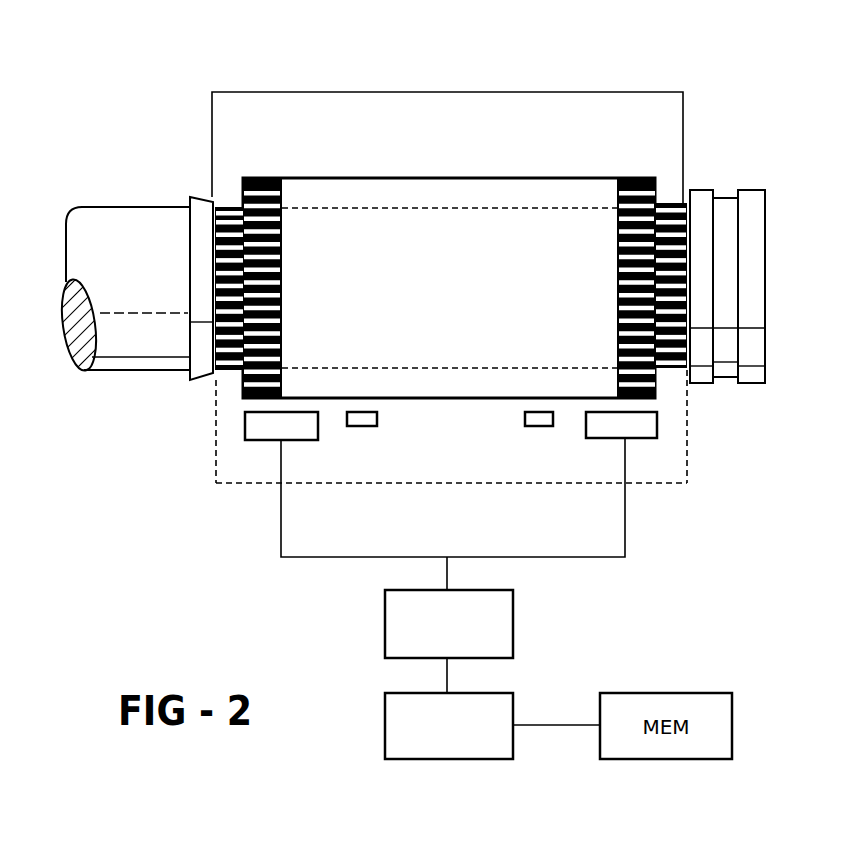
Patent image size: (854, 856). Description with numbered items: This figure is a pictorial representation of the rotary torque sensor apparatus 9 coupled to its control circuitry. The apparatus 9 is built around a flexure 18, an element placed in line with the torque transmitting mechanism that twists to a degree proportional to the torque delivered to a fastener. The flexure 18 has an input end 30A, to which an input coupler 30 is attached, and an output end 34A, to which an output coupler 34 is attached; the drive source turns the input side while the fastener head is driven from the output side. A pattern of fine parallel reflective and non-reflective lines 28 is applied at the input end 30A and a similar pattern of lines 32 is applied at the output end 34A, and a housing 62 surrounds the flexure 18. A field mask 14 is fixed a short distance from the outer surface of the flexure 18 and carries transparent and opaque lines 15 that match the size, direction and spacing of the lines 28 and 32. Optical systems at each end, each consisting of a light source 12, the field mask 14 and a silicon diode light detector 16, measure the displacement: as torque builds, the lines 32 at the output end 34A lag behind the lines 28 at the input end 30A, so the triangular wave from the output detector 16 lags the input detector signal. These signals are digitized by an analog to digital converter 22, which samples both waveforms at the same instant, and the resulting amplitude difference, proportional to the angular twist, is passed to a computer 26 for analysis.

The rotary torque sensor apparatus 9 is at (449, 246).
The housing 62 is at (620, 105).
The field mask 14 is at (402, 180).
The flexure 18 is at (602, 195).
The transparent and opaque lines 15 is at (258, 178).
The output coupler 34 is at (107, 219).
The output end 34A is at (190, 219).
The input coupler 30 is at (724, 281).
The input end 30A is at (700, 227).
The lines on output end 32 is at (232, 366).
The lines on input end 28 is at (672, 367).
The silicon diode light detector 16 is at (300, 442).
The light source 12 is at (380, 418).
The analog to digital converter 22 is at (513, 627).
The computer 26 is at (385, 725).